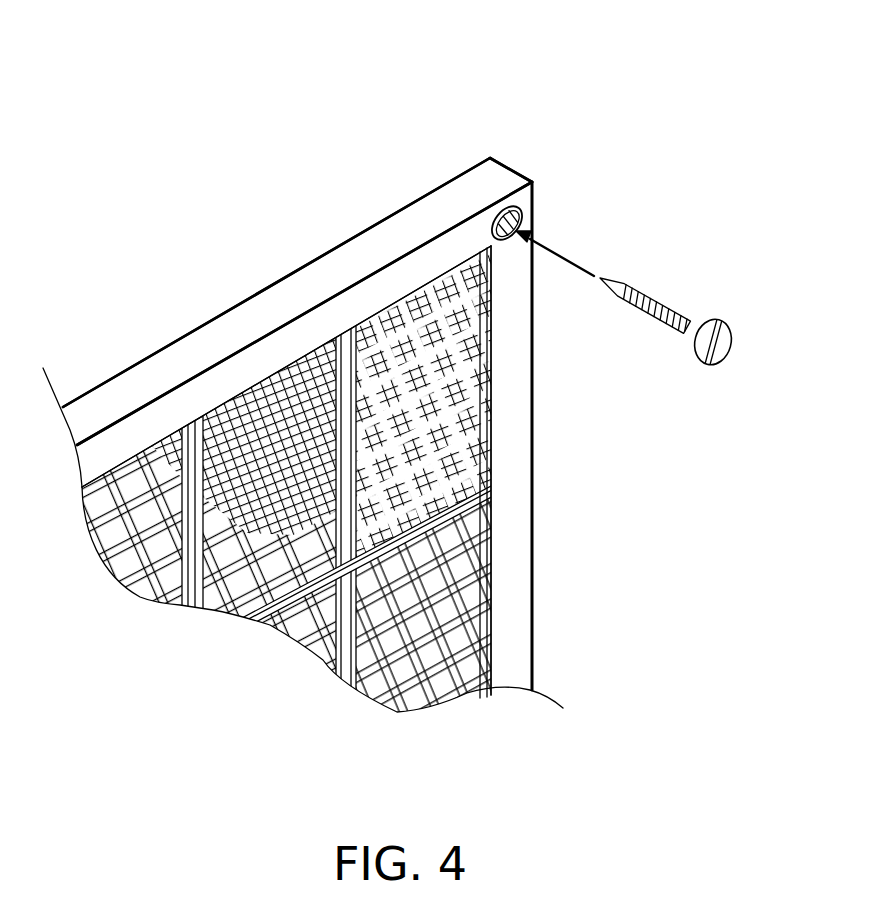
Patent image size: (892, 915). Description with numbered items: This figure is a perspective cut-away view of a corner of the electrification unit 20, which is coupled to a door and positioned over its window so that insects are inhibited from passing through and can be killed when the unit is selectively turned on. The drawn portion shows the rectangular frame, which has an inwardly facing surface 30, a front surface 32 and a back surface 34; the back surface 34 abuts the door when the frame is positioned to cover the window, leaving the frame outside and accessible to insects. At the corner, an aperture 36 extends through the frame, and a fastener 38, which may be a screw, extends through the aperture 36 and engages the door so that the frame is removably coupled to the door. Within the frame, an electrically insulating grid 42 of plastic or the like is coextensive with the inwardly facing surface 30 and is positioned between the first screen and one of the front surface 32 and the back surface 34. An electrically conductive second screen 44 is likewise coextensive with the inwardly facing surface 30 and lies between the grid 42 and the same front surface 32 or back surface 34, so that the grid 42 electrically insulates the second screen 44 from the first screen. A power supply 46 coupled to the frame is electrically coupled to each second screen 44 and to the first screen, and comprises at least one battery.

The electrification unit 20 is at (423, 136).
The inwardly facing surface 30 is at (486, 512).
The front surface 32 is at (390, 296).
The back surface 34 is at (260, 291).
The aperture 36 is at (532, 216).
The fastener 38 is at (713, 322).
The grid 42 is at (369, 523).
The second screen 44 is at (445, 300).
The power supply 46 is at (245, 457).